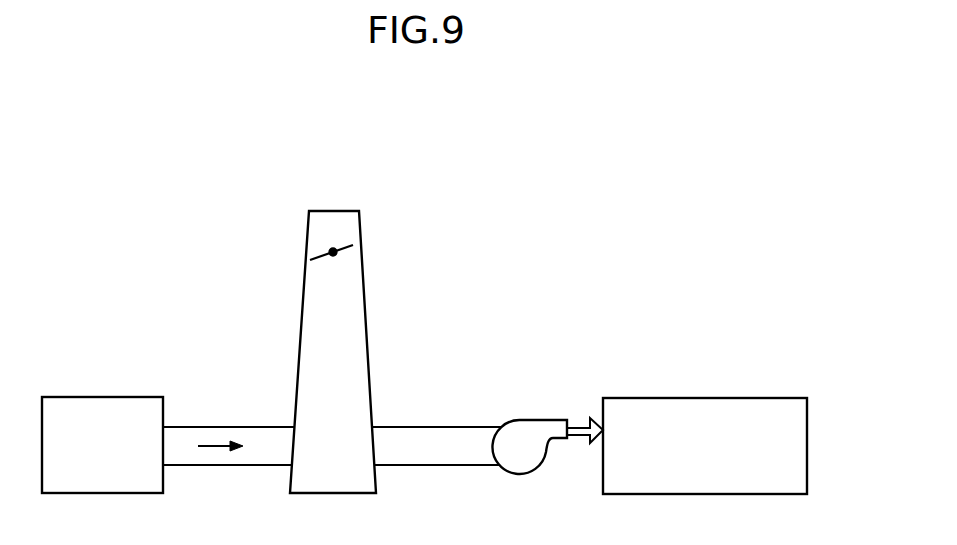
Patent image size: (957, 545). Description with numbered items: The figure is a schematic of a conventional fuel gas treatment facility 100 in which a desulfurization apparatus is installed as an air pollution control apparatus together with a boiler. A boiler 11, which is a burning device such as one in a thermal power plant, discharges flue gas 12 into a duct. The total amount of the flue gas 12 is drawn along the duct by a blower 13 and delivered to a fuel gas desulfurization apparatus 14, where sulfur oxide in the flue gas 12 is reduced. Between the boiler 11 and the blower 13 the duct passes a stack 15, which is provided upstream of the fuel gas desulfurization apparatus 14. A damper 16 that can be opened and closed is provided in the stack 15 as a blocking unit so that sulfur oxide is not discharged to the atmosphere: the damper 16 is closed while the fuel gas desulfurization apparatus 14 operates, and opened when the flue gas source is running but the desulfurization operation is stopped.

The fuel gas treatment facility 100 is at (198, 139).
The boiler 11 is at (101, 396).
The flue gas 12 is at (218, 440).
The blower 13 is at (527, 420).
The fuel gas desulfurization apparatus 14 is at (663, 397).
The stack 15 is at (362, 260).
The damper 16 is at (323, 253).